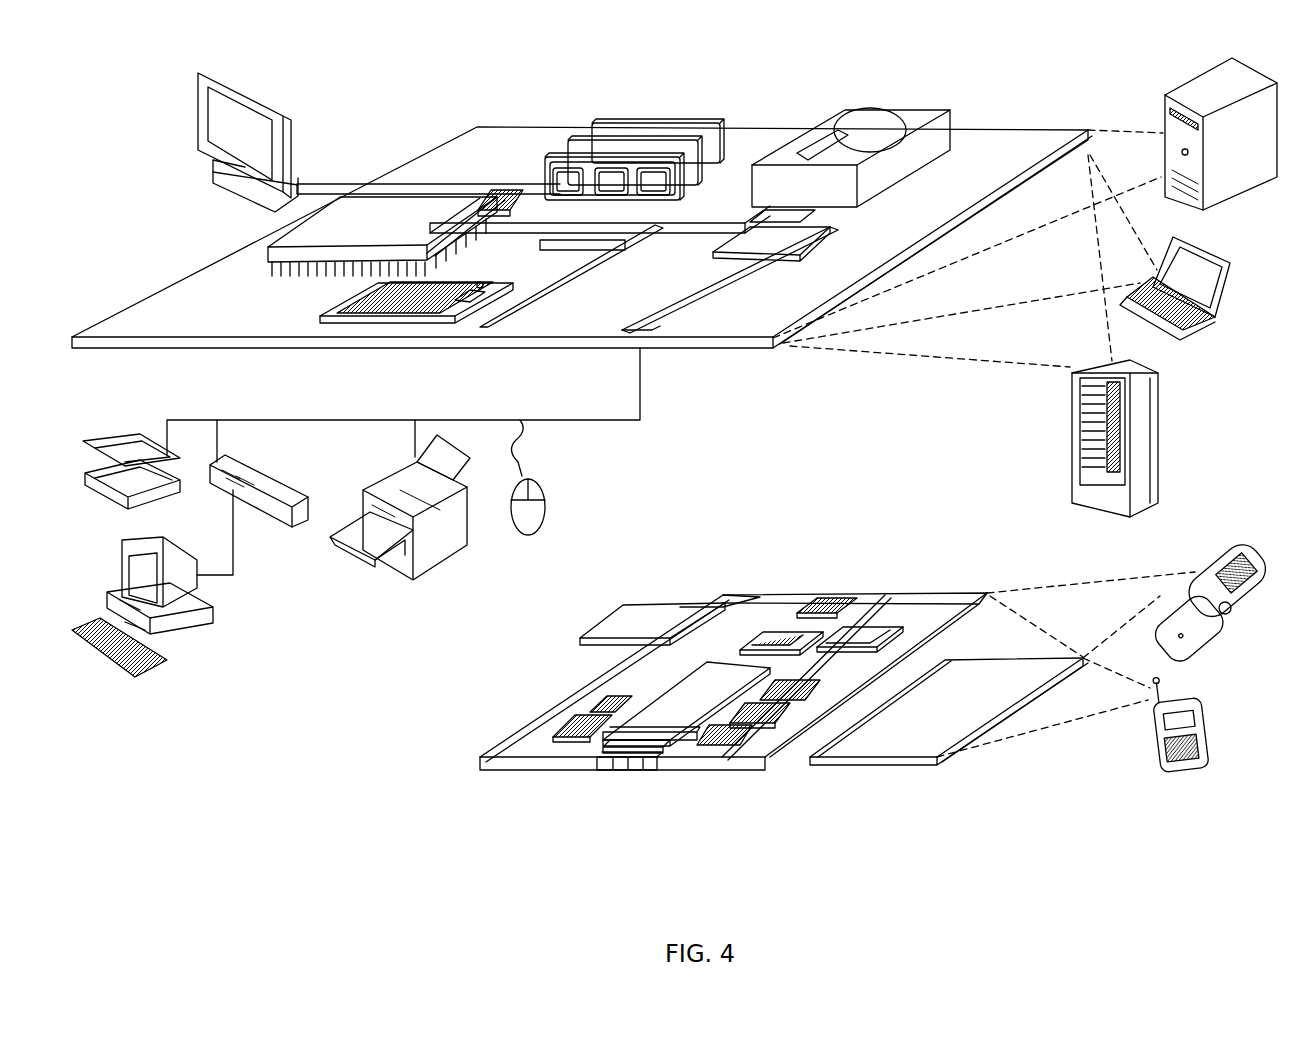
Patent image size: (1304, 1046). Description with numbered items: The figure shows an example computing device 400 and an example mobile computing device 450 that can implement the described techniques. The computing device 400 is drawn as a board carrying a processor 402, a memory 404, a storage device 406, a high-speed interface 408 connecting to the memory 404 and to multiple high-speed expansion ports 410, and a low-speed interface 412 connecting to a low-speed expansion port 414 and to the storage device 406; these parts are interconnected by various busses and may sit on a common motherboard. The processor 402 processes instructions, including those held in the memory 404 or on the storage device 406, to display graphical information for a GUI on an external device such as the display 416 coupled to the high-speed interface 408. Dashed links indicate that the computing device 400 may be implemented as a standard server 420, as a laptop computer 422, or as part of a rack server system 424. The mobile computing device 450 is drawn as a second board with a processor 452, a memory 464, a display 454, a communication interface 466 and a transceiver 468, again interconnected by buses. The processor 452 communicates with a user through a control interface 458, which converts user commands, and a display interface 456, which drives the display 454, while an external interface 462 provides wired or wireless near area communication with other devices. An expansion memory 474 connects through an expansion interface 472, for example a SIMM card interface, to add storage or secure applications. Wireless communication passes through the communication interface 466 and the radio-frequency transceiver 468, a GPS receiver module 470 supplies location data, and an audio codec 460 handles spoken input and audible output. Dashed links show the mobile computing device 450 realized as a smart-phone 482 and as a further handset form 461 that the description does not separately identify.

The computing device 400 is at (398, 102).
The processor 402 is at (261, 250).
The memory 404 is at (610, 150).
The storage device 406 is at (830, 120).
The high-speed interface 408 is at (515, 195).
The high-speed expansion ports 410 is at (322, 307).
The low-speed interface 412 is at (738, 227).
The low-speed expansion port 414 is at (660, 346).
The display 416 is at (204, 84).
The standard server 420 is at (1154, 113).
The laptop computer 422 is at (1175, 288).
The rack server system 424 is at (1072, 464).
The mobile computing device 450 is at (454, 770).
The processor 452 is at (657, 724).
The display 454 is at (903, 743).
The display interface 456 is at (740, 740).
The control interface 458 is at (770, 744).
The audio codec 460 is at (789, 731).
The mobile phone 461 is at (1209, 556).
The external interface 462 is at (622, 738).
The memory 464 is at (565, 710).
The communication interface 466 is at (778, 618).
The transceiver 468 is at (862, 618).
The GPS receiver module 470 is at (830, 591).
The expansion interface 472 is at (695, 601).
The expansion memory 474 is at (630, 606).
The smart-phone 482 is at (1154, 746).